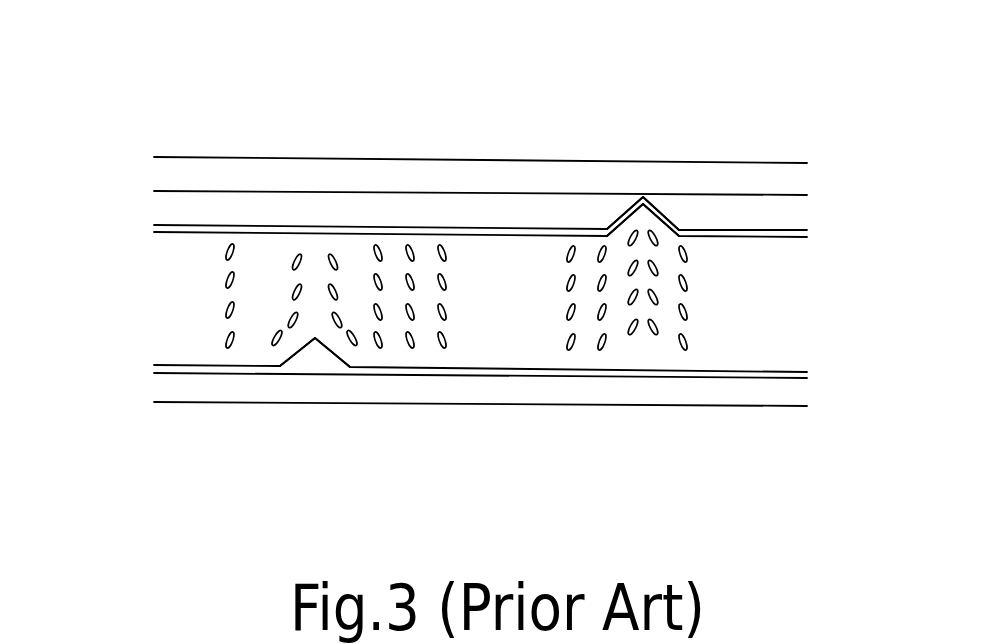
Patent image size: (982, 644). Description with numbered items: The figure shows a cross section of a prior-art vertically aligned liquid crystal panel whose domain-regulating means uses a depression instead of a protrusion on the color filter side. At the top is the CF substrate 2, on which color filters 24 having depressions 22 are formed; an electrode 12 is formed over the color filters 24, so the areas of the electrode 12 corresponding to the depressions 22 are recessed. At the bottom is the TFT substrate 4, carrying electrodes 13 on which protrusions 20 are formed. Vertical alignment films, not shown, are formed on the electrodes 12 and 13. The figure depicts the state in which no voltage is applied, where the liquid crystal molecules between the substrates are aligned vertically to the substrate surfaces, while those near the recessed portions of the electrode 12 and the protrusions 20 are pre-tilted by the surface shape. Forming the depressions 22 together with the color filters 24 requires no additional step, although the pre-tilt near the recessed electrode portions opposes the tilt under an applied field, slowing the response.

The CF substrate 2 is at (515, 160).
The TFT substrate 4 is at (535, 406).
The electrode 12 is at (763, 235).
The electrodes 13 is at (760, 373).
The protrusions 20 is at (312, 358).
The depressions 22 is at (665, 212).
The color filters 24 is at (375, 203).